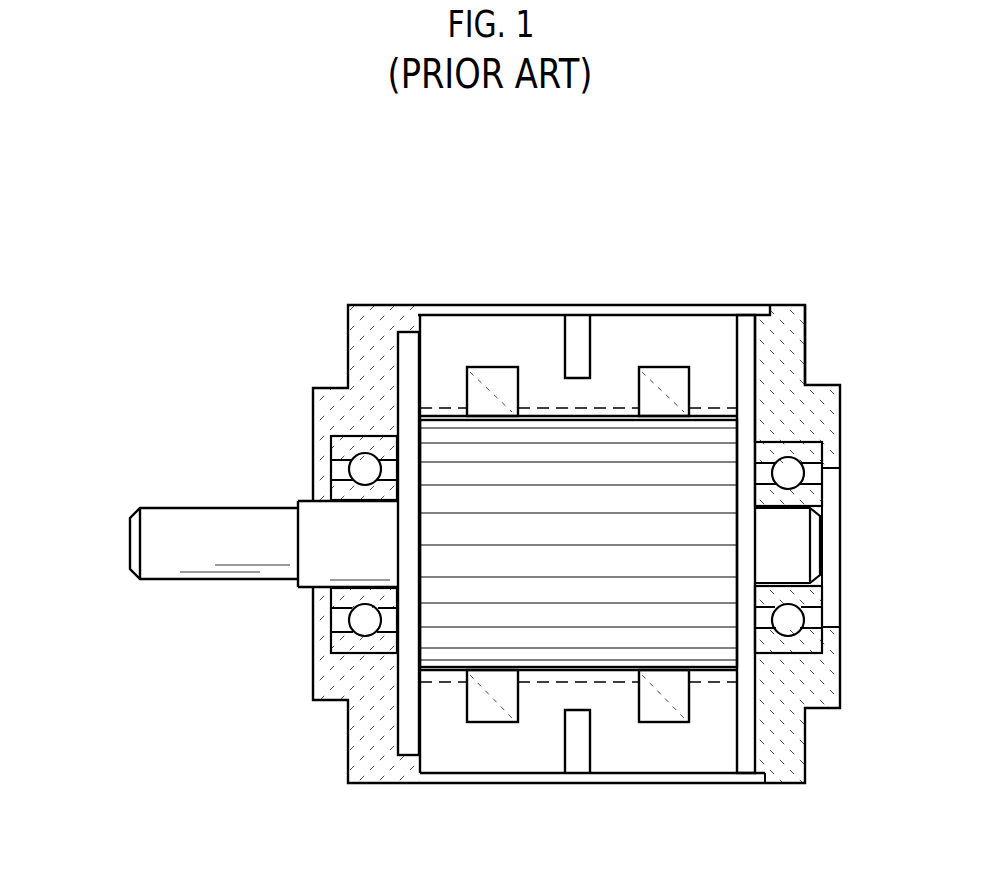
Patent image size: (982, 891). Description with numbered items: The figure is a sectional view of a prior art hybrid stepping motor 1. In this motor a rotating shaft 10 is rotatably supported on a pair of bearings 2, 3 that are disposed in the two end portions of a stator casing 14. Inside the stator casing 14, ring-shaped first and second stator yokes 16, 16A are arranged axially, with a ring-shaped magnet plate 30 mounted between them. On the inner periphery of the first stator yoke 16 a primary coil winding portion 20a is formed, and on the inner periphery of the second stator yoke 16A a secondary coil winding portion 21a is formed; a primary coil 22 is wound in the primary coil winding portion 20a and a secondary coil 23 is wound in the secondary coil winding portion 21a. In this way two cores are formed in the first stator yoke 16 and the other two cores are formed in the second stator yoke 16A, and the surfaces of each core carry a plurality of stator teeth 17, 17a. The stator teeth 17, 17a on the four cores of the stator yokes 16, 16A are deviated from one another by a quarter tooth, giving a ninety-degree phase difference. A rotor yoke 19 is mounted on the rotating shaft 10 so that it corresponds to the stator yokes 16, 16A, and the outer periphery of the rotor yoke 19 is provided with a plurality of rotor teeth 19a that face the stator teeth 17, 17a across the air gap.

The hybrid stepping motor 1 is at (248, 258).
The bearing 2 is at (340, 467).
The bearing 3 is at (802, 430).
The rotating shaft 10 is at (148, 537).
The stator casing 14 is at (678, 305).
The first stator yoke 16 is at (520, 332).
The second stator yoke 16A is at (712, 332).
The stator teeth 17 is at (445, 408).
The stator teeth 17a is at (690, 378).
The rotor yoke 19 is at (660, 632).
The rotor teeth 19a is at (700, 543).
The primary coil winding portion 20a is at (466, 375).
The secondary coil winding portion 21a is at (800, 318).
The primary coil 22 is at (492, 367).
The secondary coil 23 is at (650, 367).
The magnet plate 30 is at (578, 315).